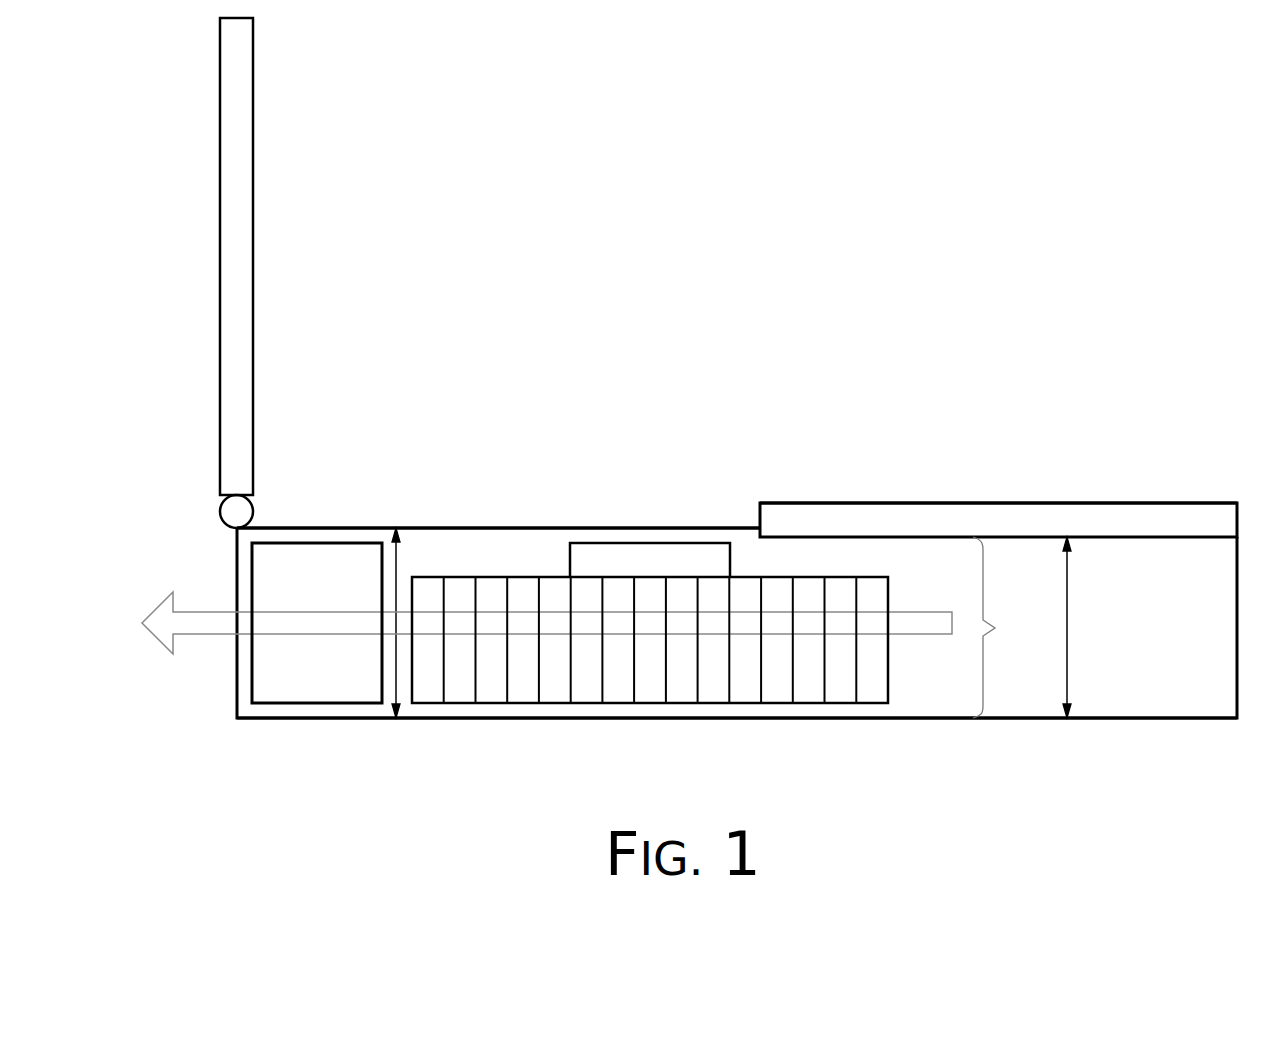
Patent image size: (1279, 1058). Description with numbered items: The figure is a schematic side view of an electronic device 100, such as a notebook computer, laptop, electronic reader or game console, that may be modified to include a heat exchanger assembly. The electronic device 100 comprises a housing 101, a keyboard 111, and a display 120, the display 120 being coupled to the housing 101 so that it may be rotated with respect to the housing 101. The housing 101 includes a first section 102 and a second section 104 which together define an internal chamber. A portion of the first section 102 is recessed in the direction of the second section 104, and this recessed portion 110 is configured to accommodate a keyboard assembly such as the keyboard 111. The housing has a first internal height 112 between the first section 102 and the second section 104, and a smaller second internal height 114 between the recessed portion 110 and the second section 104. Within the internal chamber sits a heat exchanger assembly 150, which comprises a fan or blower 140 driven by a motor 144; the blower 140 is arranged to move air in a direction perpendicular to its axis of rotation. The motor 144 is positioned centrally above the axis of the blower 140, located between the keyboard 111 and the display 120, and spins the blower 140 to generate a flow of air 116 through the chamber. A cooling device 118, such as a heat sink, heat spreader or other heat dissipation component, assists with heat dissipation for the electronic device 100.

The electronic device 100 is at (417, 371).
The housing 101 is at (1207, 720).
The first section 102 is at (443, 497).
The second section 104 is at (825, 738).
The recessed portion 110 is at (1172, 530).
The keyboard 111 is at (887, 503).
The first internal height 112 is at (397, 680).
The second internal height 114 is at (1067, 655).
The flow of air 116 is at (203, 633).
The cooling device 118 is at (316, 672).
The display 120 is at (253, 258).
The blower 140 is at (652, 713).
The motor 144 is at (650, 560).
The heat exchanger assembly 150 is at (1016, 627).